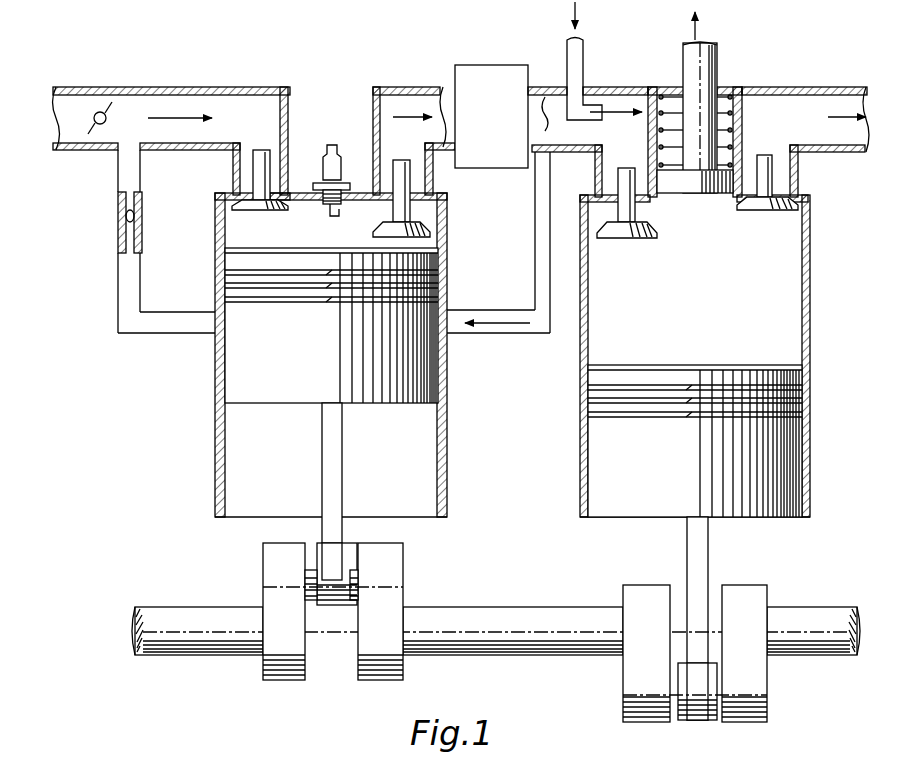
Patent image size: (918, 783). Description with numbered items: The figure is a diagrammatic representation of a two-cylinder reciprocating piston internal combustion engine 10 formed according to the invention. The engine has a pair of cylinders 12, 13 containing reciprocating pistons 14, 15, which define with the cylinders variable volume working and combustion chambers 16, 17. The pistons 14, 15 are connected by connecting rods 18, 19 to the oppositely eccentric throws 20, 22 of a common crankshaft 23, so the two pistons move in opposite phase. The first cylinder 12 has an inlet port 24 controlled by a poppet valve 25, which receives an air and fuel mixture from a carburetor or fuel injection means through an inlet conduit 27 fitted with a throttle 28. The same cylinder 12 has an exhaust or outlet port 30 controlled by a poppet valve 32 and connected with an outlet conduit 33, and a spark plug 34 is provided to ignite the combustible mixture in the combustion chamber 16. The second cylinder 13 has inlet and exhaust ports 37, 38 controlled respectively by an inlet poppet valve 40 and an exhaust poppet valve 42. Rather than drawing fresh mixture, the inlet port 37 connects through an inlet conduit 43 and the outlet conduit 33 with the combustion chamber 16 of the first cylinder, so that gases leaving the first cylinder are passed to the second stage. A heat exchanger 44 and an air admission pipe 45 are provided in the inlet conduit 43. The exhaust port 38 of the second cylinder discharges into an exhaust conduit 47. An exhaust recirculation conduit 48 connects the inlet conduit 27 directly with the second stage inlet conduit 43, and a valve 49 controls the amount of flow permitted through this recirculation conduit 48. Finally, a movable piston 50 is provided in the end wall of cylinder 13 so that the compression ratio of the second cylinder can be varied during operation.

The two-cylinder internal combustion engine 10 is at (776, 71).
The cylinder 12 is at (448, 468).
The cylinder 13 is at (810, 489).
The piston 14 is at (410, 363).
The piston 15 is at (773, 453).
The combustion chamber 16 is at (226, 236).
The combustion chamber 17 is at (808, 296).
The connecting rod 18 is at (342, 468).
The connecting rod 19 is at (702, 557).
The throw 20 is at (353, 567).
The throw 22 is at (717, 718).
The crankshaft 23 is at (496, 628).
The inlet port 24 is at (245, 193).
The poppet valve 25 is at (284, 189).
The inlet conduit 27 is at (171, 88).
The throttle 28 is at (109, 108).
The exhaust or outlet port 30 is at (434, 188).
The poppet valve 32 is at (430, 234).
The outlet conduit 33 is at (409, 87).
The spark plug 34 is at (335, 170).
The inlet port 37 is at (612, 198).
The exhaust port 38 is at (783, 188).
The inlet poppet valve 40 is at (618, 240).
The exhaust poppet valve 42 is at (788, 210).
The inlet conduit 43 is at (632, 87).
The heat exchanger 44 is at (500, 80).
The air admission pipe 45 is at (578, 75).
The exhaust conduit 47 is at (818, 87).
The exhaust recirculation conduit 48 is at (518, 333).
The valve 49 is at (128, 215).
The movable piston 50 is at (683, 188).